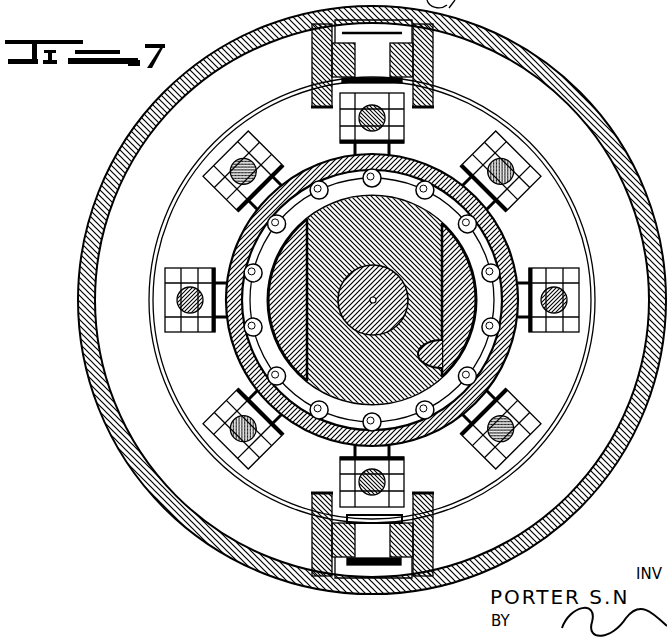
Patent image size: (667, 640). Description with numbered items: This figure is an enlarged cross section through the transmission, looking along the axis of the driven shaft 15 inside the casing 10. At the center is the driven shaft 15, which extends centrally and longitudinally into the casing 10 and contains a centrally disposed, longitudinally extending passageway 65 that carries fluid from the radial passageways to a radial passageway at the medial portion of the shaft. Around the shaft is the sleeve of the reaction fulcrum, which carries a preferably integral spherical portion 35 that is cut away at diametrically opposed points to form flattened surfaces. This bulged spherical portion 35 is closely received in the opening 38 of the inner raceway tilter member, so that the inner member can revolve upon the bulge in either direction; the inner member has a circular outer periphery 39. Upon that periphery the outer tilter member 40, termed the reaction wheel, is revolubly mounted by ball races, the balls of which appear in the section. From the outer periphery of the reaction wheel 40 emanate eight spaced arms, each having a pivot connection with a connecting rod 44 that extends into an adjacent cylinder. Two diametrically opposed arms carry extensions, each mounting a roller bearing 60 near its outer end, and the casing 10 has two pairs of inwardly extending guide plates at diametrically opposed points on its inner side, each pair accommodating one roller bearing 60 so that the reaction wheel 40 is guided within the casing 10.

The casing 10 is at (589, 113).
The driven shaft 15 is at (447, 288).
The spherical portion 35 is at (347, 446).
The opening 38 is at (485, 385).
The circular outer periphery 39 is at (502, 225).
The outer tilter member 40 is at (420, 163).
The connecting rod 44 is at (512, 145).
The roller bearing 60 is at (343, 568).
The longitudinal passageway 65 is at (467, 262).